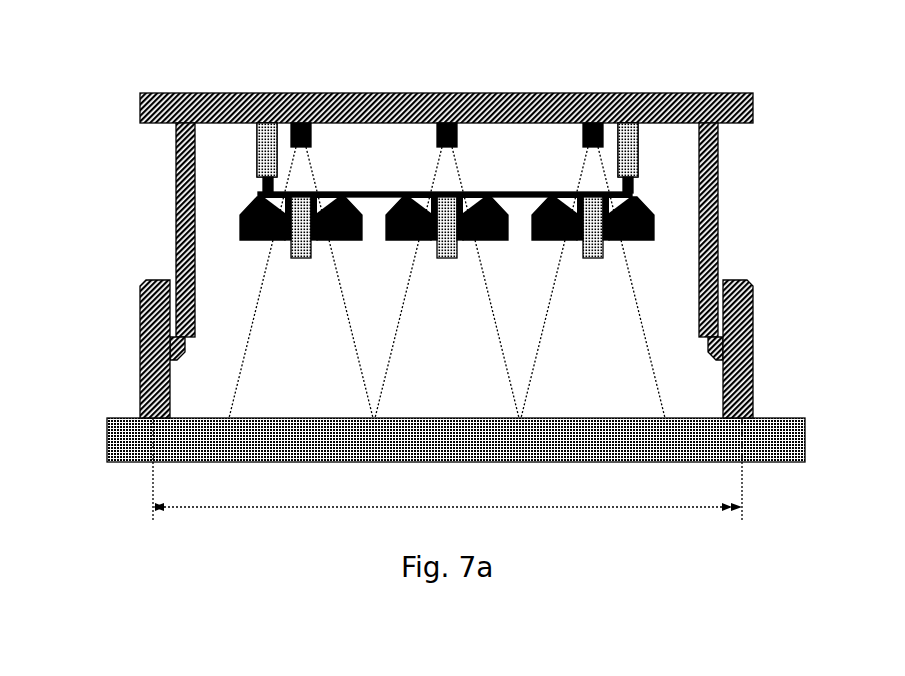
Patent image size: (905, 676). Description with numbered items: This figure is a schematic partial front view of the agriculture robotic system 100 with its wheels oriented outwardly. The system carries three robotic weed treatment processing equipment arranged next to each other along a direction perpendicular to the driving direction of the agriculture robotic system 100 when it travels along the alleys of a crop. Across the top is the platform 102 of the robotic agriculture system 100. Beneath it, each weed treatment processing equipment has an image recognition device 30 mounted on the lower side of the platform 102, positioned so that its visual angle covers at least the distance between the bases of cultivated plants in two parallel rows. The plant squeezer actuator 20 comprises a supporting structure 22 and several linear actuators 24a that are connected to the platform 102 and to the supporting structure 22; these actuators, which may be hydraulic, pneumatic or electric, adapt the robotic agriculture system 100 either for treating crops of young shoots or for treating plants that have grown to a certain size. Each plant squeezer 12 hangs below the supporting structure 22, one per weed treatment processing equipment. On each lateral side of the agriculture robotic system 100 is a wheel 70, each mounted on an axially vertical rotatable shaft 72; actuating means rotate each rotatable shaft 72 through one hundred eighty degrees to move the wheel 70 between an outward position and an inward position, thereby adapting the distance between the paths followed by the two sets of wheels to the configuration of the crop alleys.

The agriculture robotic system 100 is at (178, 49).
The platform 102 is at (554, 92).
The plant squeezer actuator 20 is at (658, 136).
The rotatable shaft 72 is at (176, 195).
The wheel 70 is at (146, 270).
The linear actuator 24a is at (257, 144).
The supporting structure 22 is at (524, 200).
The image recognition device 30 is at (436, 135).
The plant squeezer 12 is at (297, 295).